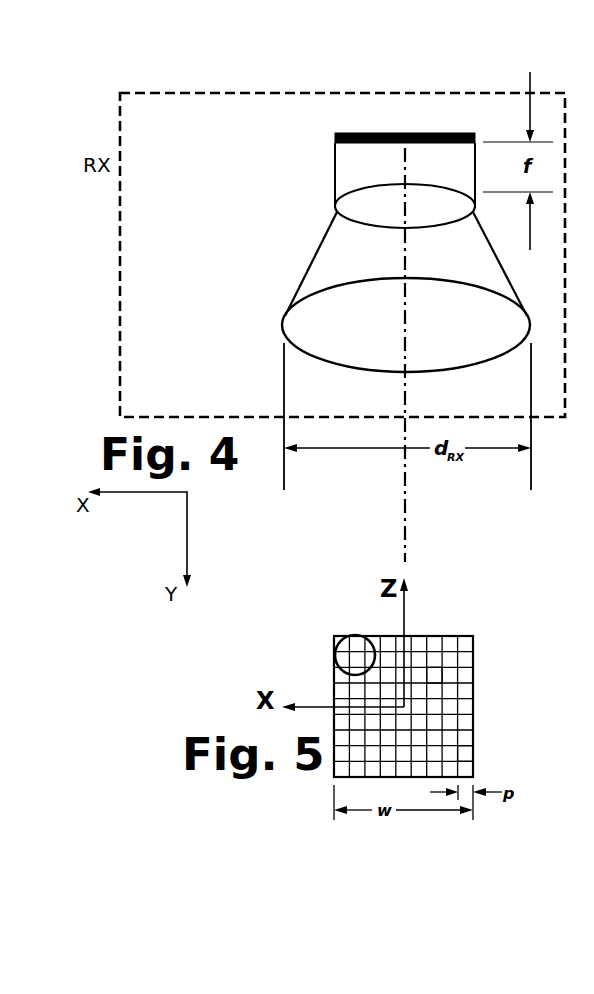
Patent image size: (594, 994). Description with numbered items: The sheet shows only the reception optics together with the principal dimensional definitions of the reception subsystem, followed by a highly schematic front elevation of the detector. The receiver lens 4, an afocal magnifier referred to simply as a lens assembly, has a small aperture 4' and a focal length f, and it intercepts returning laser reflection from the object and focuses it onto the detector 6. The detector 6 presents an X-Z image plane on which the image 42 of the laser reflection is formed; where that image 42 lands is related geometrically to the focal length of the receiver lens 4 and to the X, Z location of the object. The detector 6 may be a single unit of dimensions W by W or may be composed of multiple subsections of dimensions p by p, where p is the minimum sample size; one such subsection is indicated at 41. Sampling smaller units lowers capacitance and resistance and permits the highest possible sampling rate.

In FIG. 4, the detector 6 is at (357, 130).
In FIG. 5, the detector 6 is at (466, 611).
In FIG. 4, the receiver lens 4 is at (406, 229).
In FIG. 4, the aperture 4' is at (406, 329).
In FIG. 5, the detector pixel 41 is at (435, 675).
In FIG. 5, the image 42 is at (325, 620).